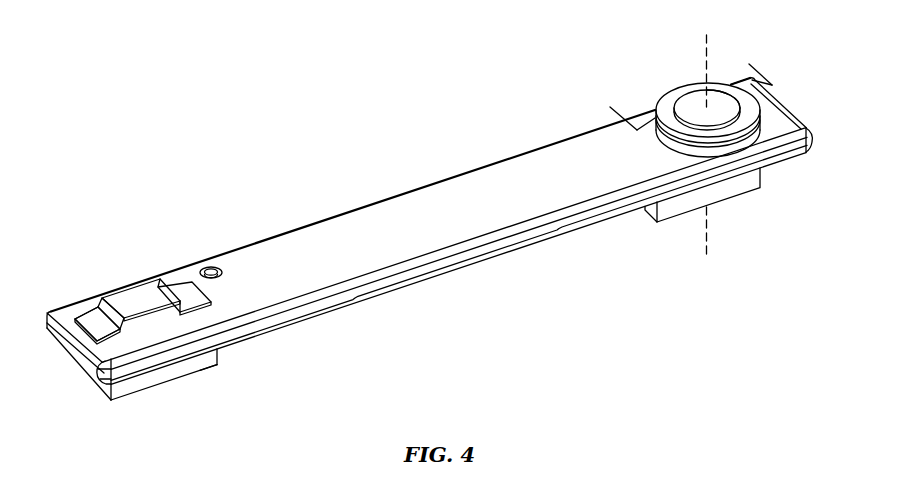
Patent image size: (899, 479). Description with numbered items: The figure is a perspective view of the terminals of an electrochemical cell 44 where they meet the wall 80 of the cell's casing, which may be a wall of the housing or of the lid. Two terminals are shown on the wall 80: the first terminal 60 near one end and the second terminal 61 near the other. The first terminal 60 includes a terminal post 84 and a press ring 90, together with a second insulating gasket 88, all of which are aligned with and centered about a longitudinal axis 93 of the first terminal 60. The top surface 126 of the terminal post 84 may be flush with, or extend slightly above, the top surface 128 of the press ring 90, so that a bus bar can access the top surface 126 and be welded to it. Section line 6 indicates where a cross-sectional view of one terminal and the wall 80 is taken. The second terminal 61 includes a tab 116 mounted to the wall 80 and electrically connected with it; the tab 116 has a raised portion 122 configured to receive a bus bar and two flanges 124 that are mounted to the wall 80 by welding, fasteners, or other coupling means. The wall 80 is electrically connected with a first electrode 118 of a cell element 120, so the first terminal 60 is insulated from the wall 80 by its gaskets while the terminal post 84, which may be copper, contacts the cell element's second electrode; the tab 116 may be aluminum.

The electrochemical cell 44 is at (393, 123).
The wall 80 is at (418, 203).
The second insulating gasket 88 is at (789, 115).
The second terminal 61 is at (152, 267).
The tab 116 is at (90, 320).
The raised portion 122 is at (125, 300).
The flanges 124 is at (97, 300).
The cell element 120 is at (185, 380).
The first electrode 118 is at (200, 363).
The first terminal 60 is at (717, 89).
The top surface of the press ring 128 is at (683, 88).
The press ring 90 is at (667, 106).
The terminal post 84 is at (700, 104).
The top surface of the terminal post 126 is at (723, 110).
The longitudinal axis 93 is at (708, 240).
The section line 6- 6 is at (608, 105).